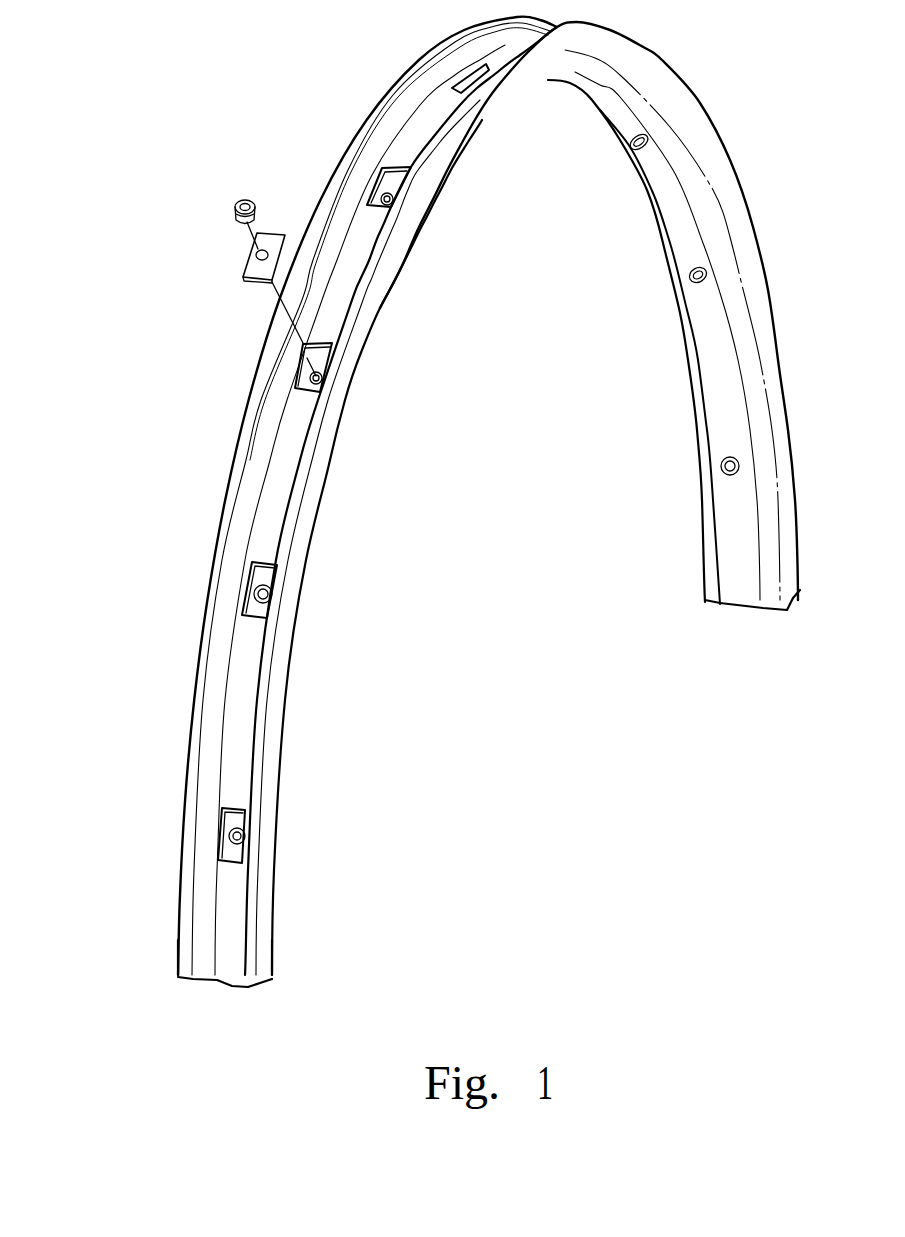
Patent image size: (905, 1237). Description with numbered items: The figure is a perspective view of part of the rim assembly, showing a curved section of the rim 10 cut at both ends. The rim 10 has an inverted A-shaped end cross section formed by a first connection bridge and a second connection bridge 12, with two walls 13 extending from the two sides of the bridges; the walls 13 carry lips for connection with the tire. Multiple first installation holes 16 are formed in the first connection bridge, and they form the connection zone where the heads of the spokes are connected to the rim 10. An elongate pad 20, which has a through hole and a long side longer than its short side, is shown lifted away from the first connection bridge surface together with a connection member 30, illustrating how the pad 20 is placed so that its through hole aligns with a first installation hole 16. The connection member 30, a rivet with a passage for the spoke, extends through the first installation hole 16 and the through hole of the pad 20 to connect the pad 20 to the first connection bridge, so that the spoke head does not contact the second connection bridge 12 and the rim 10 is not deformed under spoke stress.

The rim 10 is at (448, 569).
The second connection bridge 12 is at (238, 965).
The walls 13 is at (323, 452).
The first installation holes 16 is at (308, 377).
The pad 20 is at (253, 263).
The connection member 30 is at (250, 197).